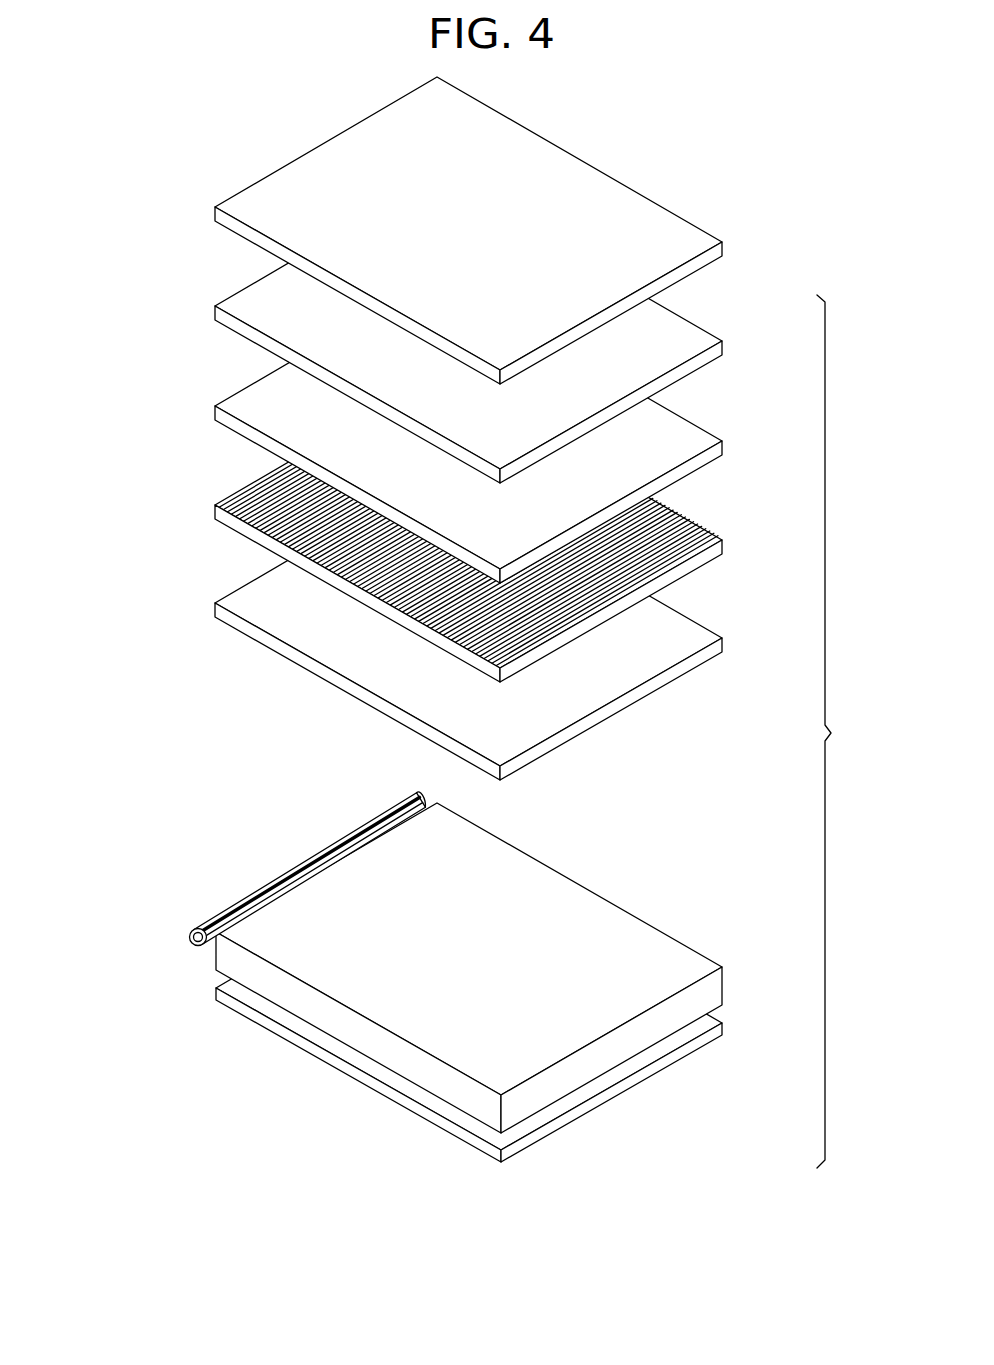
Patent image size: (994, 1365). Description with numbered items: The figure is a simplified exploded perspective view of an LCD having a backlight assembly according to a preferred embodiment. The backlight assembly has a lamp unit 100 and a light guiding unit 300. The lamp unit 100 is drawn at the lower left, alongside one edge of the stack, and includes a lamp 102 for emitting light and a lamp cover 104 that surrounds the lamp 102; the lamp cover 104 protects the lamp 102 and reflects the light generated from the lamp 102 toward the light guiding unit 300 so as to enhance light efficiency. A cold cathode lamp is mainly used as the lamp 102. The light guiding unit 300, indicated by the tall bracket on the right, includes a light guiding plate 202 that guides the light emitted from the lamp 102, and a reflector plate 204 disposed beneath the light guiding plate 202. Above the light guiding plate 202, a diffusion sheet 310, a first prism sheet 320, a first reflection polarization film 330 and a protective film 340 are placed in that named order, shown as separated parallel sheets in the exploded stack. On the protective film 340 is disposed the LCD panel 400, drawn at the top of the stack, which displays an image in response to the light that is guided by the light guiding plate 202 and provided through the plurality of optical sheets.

The lamp unit 100 is at (229, 890).
The lamp 102 is at (191, 942).
The lamp cover 104 is at (200, 927).
The light guiding plate 202 is at (605, 912).
The reflector plate 204 is at (340, 1067).
The light guiding unit 300 is at (852, 731).
The diffusion sheet 310 is at (723, 643).
The first prism sheet 320 is at (730, 547).
The first reflection polarization film 330 is at (723, 445).
The protective film 340 is at (730, 347).
The LCD panel 400 is at (723, 245).